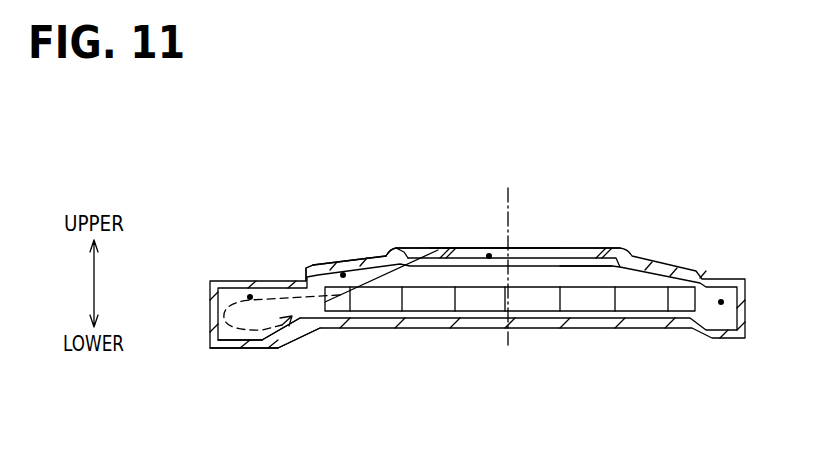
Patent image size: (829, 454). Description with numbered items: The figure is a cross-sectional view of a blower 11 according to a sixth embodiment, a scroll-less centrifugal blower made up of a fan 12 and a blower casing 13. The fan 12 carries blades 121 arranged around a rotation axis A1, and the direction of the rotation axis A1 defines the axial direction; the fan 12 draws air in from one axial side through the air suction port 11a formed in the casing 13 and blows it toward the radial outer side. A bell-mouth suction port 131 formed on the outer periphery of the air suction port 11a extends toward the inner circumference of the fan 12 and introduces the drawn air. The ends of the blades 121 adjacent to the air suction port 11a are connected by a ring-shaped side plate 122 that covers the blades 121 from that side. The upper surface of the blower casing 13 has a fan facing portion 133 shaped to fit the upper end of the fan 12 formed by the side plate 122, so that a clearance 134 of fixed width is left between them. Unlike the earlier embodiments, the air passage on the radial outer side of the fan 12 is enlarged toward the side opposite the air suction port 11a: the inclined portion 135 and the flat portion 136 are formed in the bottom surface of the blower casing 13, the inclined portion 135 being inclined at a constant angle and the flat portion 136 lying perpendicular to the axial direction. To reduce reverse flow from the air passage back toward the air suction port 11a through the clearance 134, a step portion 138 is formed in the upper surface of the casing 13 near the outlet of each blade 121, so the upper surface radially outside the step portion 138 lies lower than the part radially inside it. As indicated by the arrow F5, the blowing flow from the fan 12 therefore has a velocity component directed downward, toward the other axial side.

The blower 11 is at (198, 200).
The air suction port 11a is at (489, 256).
The fan 12 is at (598, 255).
The blower casing 13 is at (198, 304).
The blades 121 is at (418, 300).
The side plate 122 is at (574, 279).
The suction port 131 is at (412, 257).
The fan facing portion 133 is at (363, 261).
The clearance 134 is at (343, 275).
The inclined portion 135 is at (306, 341).
The flat portion 136 is at (252, 350).
The step portion 138 is at (306, 276).
The arrow F5 is at (436, 252).
The rotation axis A1 is at (513, 222).